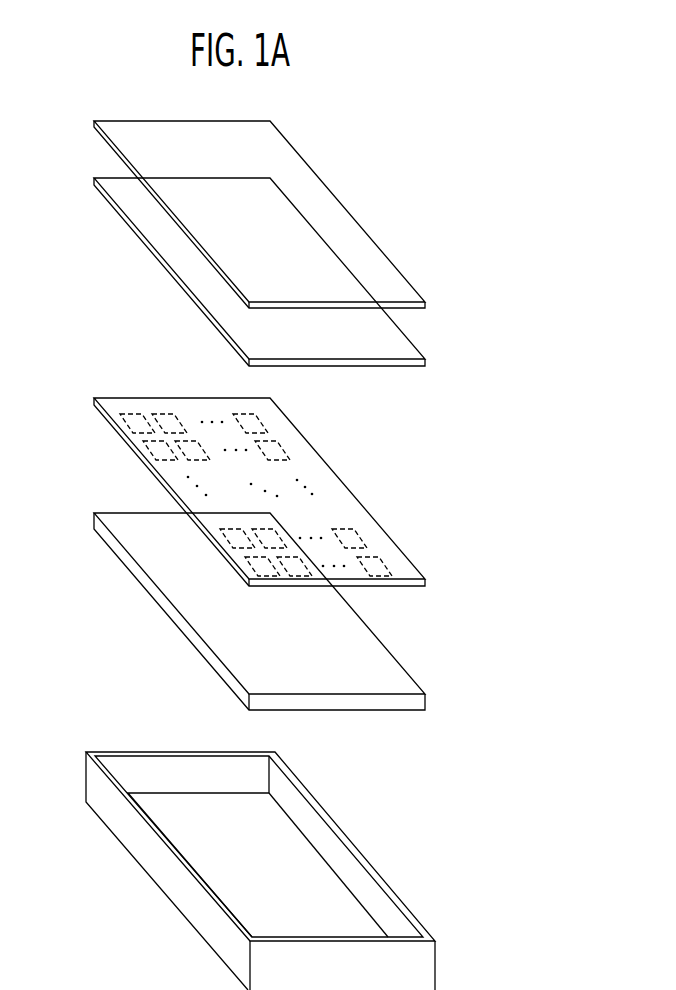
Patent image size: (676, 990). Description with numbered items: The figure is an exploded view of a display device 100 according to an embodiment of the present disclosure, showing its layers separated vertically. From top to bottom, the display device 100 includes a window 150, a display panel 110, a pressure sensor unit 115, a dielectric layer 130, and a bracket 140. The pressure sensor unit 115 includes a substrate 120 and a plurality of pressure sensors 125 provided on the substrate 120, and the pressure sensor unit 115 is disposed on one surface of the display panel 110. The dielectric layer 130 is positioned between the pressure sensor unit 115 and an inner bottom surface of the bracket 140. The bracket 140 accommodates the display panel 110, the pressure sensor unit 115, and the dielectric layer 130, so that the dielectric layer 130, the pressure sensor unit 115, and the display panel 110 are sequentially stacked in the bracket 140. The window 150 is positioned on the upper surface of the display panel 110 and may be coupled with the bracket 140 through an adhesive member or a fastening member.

The display device 100 is at (405, 128).
The display panel 110 is at (413, 348).
The pressure sensor unit 115 is at (368, 480).
The substrate 120 is at (291, 492).
The pressure sensors 125 is at (360, 538).
The dielectric layer 130 is at (427, 702).
The bracket 140 is at (437, 968).
The window 150 is at (387, 257).